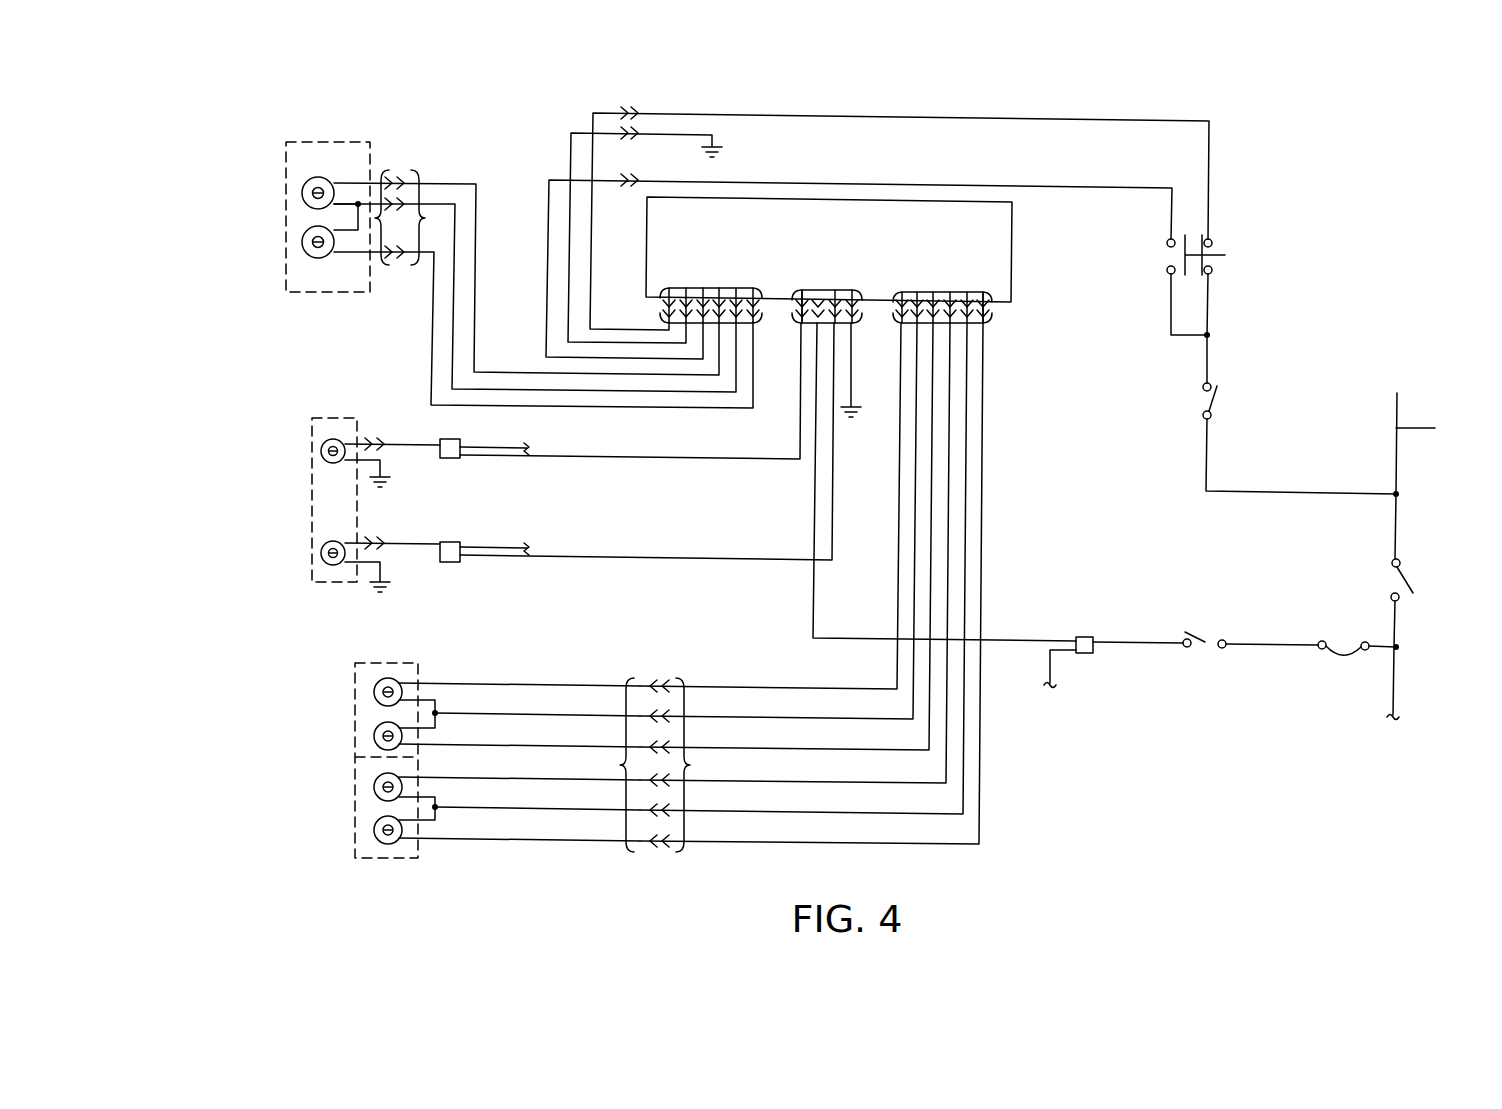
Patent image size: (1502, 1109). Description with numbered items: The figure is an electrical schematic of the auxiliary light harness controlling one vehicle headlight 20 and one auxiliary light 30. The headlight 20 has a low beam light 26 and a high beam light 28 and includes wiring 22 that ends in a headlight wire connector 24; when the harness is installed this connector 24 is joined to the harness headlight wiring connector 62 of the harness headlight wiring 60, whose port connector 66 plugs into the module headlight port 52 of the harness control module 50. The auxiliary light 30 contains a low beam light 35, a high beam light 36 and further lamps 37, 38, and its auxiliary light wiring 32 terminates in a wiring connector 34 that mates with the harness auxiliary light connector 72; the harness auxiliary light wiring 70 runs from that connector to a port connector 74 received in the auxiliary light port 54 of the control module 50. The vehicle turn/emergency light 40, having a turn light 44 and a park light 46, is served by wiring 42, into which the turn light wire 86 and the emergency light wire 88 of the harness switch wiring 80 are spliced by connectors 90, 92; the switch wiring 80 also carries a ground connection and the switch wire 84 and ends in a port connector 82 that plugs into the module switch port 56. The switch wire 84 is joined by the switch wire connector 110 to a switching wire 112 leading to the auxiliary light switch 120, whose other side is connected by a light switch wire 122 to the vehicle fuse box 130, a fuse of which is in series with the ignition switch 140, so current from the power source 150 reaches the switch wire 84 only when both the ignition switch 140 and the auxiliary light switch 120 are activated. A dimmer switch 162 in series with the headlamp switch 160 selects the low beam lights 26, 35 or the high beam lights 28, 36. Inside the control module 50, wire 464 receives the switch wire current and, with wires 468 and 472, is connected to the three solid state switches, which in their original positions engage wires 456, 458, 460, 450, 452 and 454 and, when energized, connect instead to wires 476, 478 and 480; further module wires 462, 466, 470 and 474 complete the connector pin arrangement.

The headlight 20 is at (313, 140).
The headlight wiring 22 is at (384, 268).
The headlight wire connector 24 is at (383, 170).
The low beam light 26 is at (303, 186).
The high beam light 28 is at (303, 246).
The auxiliary light 30 is at (350, 755).
The auxiliary light wiring 32 is at (538, 850).
The wiring connector 34 is at (608, 765).
The low beam light 35 is at (375, 797).
The high beam light 36 is at (373, 839).
The auxiliary turn lamp 37 is at (396, 680).
The auxiliary emergency lamp 38 is at (382, 724).
The turn/emergency light 40 is at (315, 414).
The wiring 42 is at (415, 538).
The turn light 44 is at (340, 440).
The park light 46 is at (324, 543).
The harness control module 50 is at (889, 198).
The module headlight port 52 is at (722, 280).
The auxiliary light port 54 is at (940, 285).
The module switch port 56 is at (820, 292).
The harness headlight wiring 60 is at (672, 412).
The harness headlight wiring connector 62 is at (418, 170).
The port connector 66 is at (712, 330).
The harness auxiliary light wiring 70 is at (987, 380).
The harness auxiliary light connector 72 is at (688, 765).
The port connector 74 is at (940, 330).
The harness switch wiring 80 is at (797, 370).
The port connector 82 is at (820, 328).
The switch wire 84 is at (812, 598).
The turn light wire 86 is at (693, 462).
The emergency light wire 88 is at (660, 562).
The connector 90 is at (455, 457).
The connector 92 is at (455, 545).
The switch wire connector 110 is at (1082, 636).
The switching wire 112 is at (1125, 650).
The auxiliary light switch 120 is at (1202, 638).
The light switch wire 122 is at (1246, 644).
The fuse box 130 is at (1330, 641).
The ignition switch 140 is at (1403, 578).
The power source 150 is at (1426, 460).
The headlamp switch 160 is at (1210, 406).
The dimmer switch 162 is at (1192, 232).
The wire 450 is at (662, 291).
The wire 452 is at (673, 285).
The wire 454 is at (693, 283).
The wire 456 is at (713, 281).
The wire 458 is at (735, 282).
The wire 460 is at (753, 288).
The connector pin 462 is at (796, 288).
The wire 464 is at (800, 292).
The connector pin 466 is at (836, 292).
The wire 468 is at (853, 292).
The connector pin 470 is at (903, 292).
The wire 472 is at (918, 292).
The connector pin 474 is at (950, 292).
The wire 476 is at (963, 292).
The wire 478 is at (973, 293).
The wire 480 is at (984, 295).